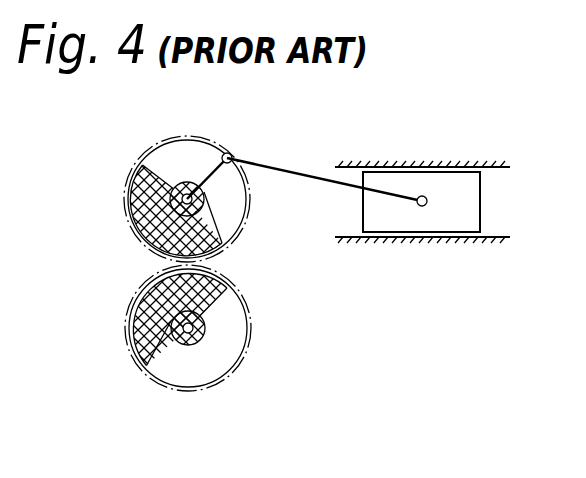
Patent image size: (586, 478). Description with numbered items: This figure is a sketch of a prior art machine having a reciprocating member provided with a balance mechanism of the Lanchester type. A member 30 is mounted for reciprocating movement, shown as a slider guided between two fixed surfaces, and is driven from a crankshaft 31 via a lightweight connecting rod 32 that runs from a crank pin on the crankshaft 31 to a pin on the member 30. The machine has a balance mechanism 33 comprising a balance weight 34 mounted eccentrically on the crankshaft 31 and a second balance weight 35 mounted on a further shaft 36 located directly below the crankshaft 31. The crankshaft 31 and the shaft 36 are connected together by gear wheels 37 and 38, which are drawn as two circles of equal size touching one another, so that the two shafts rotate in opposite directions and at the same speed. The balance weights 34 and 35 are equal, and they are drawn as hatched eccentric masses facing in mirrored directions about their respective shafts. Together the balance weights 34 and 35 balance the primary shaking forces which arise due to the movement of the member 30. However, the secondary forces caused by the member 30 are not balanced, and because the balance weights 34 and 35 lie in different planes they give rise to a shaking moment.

The member 30 is at (437, 218).
The crankshaft 31 is at (226, 152).
The connecting rod 32 is at (305, 172).
The balance mechanism 33 is at (120, 259).
The balance weight 34 is at (133, 195).
The balance weight 35 is at (132, 347).
The further shaft 36 is at (200, 334).
The gear wheel 37 is at (240, 236).
The gear wheel 38 is at (246, 312).